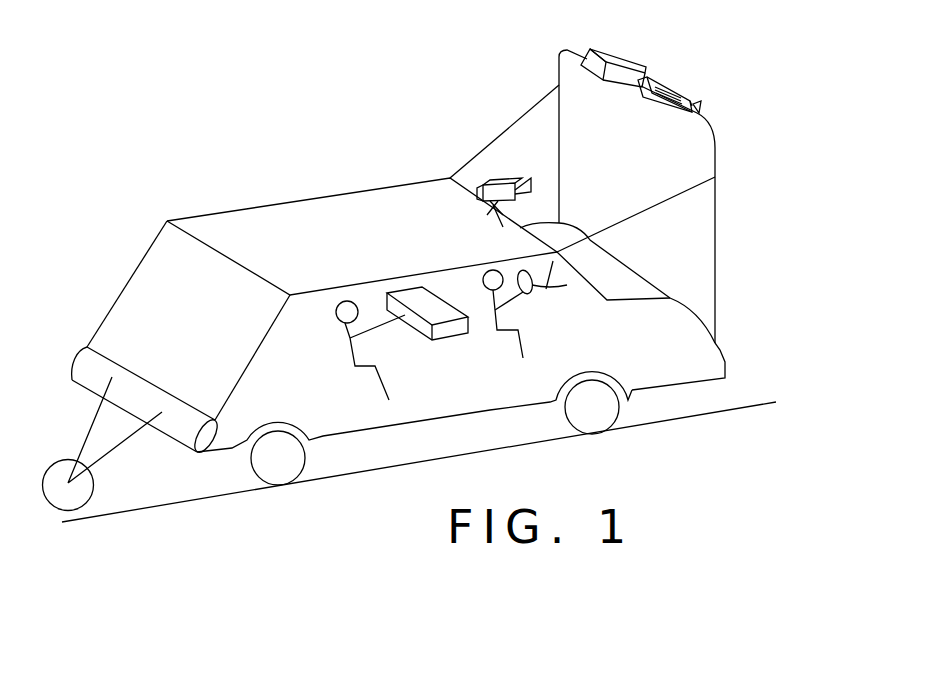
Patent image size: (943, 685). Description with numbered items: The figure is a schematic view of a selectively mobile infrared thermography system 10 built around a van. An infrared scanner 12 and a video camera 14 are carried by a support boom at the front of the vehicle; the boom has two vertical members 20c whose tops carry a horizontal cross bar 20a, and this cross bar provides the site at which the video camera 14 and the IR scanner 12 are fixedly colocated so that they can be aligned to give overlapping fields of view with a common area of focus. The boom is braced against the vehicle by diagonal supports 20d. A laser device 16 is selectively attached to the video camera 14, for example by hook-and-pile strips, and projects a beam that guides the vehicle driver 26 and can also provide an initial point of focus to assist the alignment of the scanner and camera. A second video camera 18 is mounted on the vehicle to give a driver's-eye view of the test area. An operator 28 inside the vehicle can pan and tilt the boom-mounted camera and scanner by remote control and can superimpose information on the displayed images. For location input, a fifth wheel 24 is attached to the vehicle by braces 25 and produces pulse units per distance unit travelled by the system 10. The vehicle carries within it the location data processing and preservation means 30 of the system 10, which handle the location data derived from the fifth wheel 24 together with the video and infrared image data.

The selectively mobile infrared thermography system 10 is at (302, 172).
The infrared scanner 12 is at (618, 50).
The video camera 14 is at (643, 92).
The laser device 16 is at (668, 104).
The second video camera 18 is at (494, 178).
The horizontal cross bar 20a is at (574, 36).
The vertical members 20c is at (737, 250).
The diagonal supports 20d is at (524, 112).
The fifth wheel 24 is at (94, 488).
The braces 25 is at (129, 440).
The vehicle driver 26 is at (493, 270).
The operator 28 is at (343, 323).
The location data processing and preservation means 30 is at (436, 336).